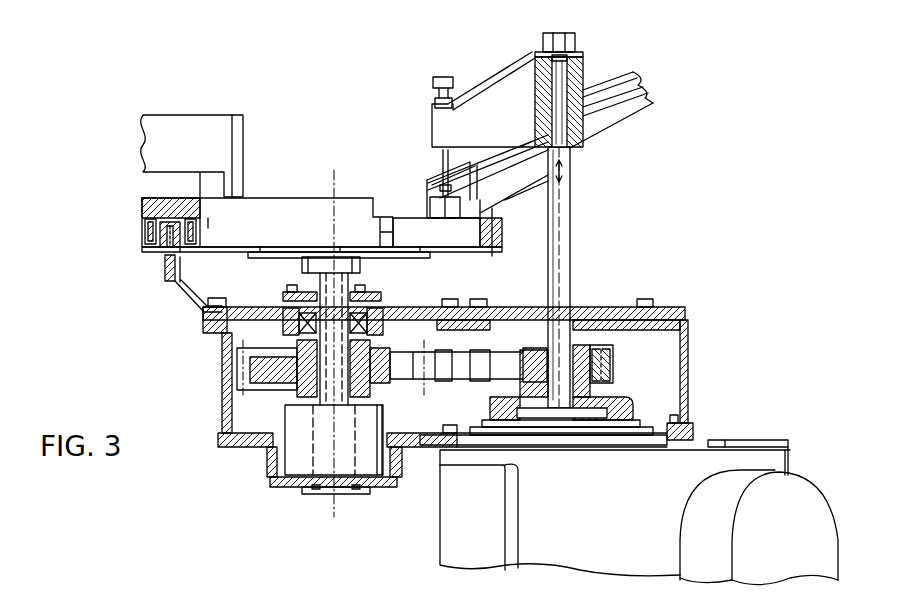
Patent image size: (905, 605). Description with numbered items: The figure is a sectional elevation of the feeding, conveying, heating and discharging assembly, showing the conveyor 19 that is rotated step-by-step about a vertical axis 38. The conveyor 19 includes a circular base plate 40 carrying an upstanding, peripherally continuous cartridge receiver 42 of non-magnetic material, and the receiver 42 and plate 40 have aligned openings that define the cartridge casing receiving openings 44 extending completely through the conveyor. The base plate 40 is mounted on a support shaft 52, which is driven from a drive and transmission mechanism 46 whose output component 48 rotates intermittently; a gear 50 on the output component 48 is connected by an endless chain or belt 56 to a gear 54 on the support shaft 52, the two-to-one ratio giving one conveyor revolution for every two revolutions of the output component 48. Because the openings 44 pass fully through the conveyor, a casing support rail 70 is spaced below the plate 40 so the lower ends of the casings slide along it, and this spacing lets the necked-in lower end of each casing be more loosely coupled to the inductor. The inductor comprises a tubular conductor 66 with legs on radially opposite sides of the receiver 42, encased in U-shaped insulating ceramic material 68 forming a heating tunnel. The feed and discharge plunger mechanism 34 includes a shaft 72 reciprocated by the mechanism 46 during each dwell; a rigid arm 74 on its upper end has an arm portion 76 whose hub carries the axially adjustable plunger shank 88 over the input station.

The conveyor 19 is at (520, 237).
The feed and discharge plunger mechanism 34 is at (598, 152).
The vertical axis 38 is at (336, 190).
The base plate 40 is at (443, 257).
The cartridge receiver 42 is at (498, 227).
The cartridge casing receiving openings 44 is at (497, 244).
The drive and transmission mechanism 46 is at (745, 431).
The output component 48 is at (630, 420).
The gear 50 is at (600, 348).
The support shaft 52 is at (290, 300).
The gear 54 is at (244, 375).
The endless chain or belt 56 is at (608, 367).
The tubular conductor 66 is at (147, 242).
The insulating ceramic material 68 is at (140, 210).
The casing support rail 70 is at (165, 270).
The shaft 72 is at (563, 233).
The rigid arm 74 is at (592, 52).
The arm portion 76 is at (515, 78).
The plunger shank 88 is at (441, 163).